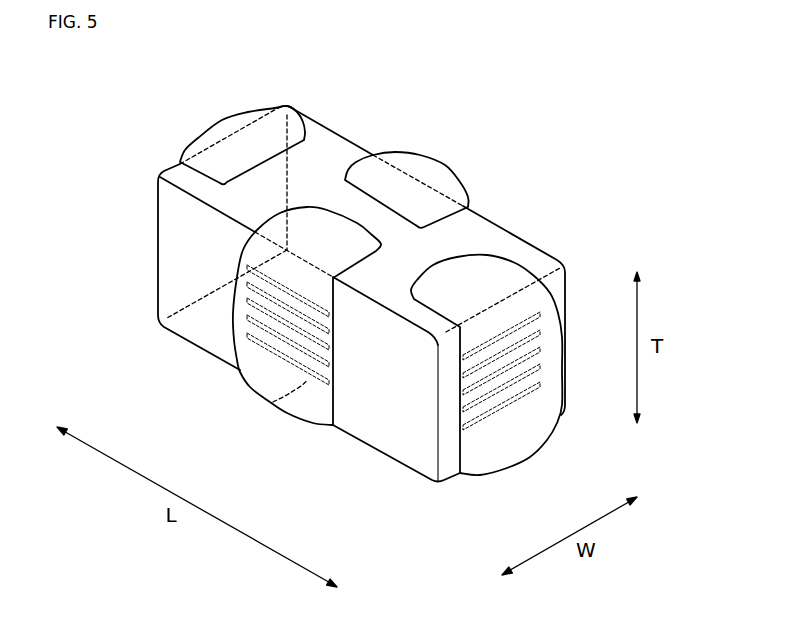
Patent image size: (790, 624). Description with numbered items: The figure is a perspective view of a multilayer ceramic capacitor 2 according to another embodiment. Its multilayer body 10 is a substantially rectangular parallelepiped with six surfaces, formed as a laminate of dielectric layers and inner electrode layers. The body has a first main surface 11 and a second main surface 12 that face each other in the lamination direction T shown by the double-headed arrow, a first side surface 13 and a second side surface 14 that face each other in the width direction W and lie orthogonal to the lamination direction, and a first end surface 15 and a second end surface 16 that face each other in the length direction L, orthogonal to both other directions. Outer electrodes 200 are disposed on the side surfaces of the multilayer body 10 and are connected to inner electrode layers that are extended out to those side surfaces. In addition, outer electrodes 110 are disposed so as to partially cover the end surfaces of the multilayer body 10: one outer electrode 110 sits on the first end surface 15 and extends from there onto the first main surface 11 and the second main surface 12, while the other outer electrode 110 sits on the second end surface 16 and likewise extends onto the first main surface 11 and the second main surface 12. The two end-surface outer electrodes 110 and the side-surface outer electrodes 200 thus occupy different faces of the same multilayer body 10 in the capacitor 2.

The multilayer ceramic capacitor 2 is at (391, 285).
The multilayer body 10 is at (391, 274).
The first main surface 11 is at (483, 227).
The second main surface 12 is at (267, 405).
The first side surface 13 is at (353, 417).
The second side surface 14 is at (373, 155).
The first end surface 15 is at (222, 160).
The second end surface 16 is at (558, 293).
The outer electrode 110 is at (244, 117).
The outer electrode 200 is at (423, 175).